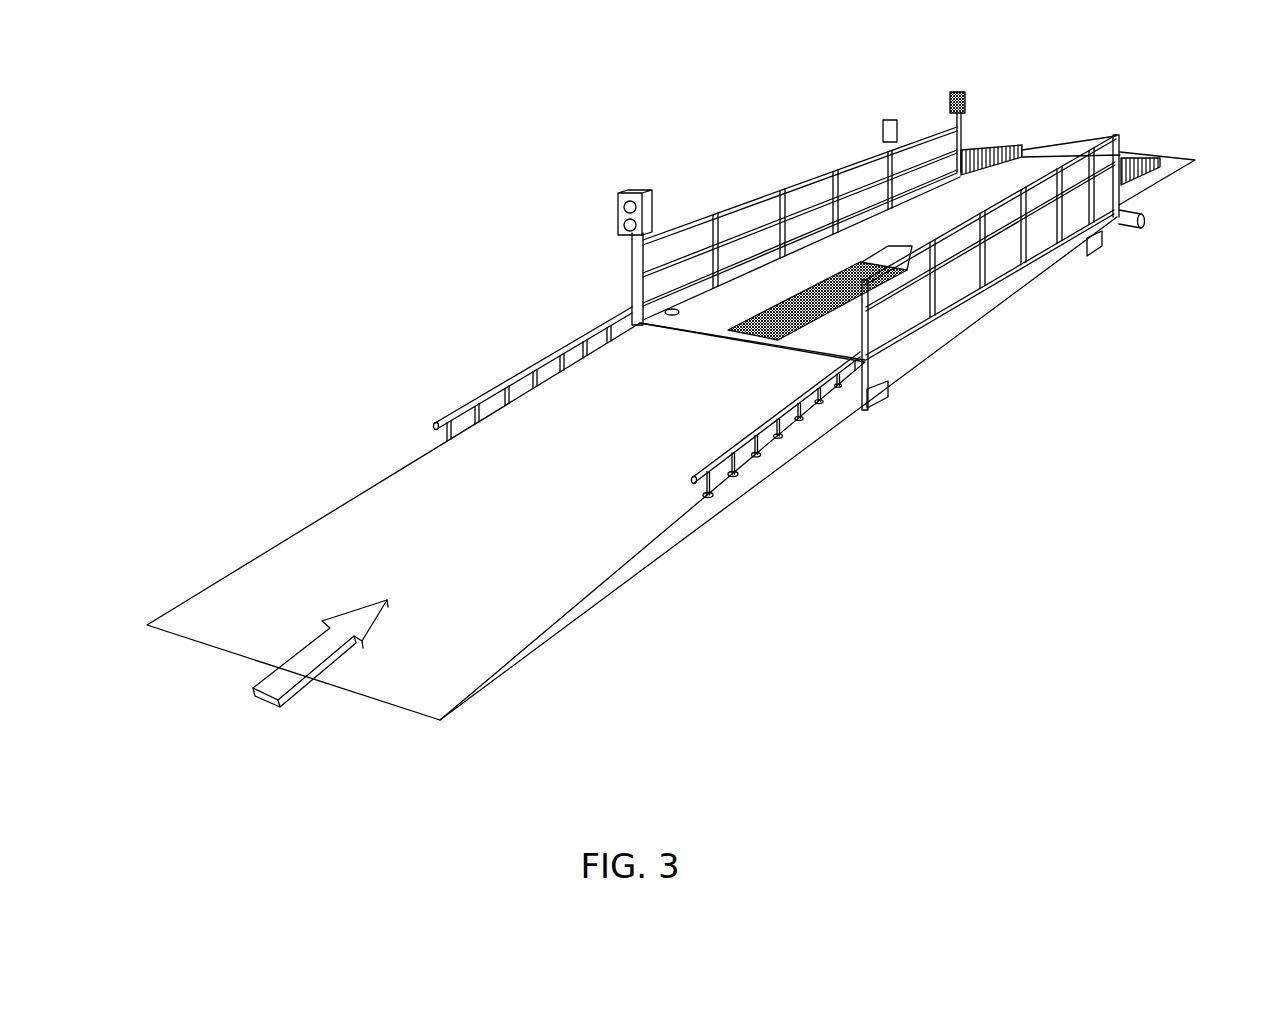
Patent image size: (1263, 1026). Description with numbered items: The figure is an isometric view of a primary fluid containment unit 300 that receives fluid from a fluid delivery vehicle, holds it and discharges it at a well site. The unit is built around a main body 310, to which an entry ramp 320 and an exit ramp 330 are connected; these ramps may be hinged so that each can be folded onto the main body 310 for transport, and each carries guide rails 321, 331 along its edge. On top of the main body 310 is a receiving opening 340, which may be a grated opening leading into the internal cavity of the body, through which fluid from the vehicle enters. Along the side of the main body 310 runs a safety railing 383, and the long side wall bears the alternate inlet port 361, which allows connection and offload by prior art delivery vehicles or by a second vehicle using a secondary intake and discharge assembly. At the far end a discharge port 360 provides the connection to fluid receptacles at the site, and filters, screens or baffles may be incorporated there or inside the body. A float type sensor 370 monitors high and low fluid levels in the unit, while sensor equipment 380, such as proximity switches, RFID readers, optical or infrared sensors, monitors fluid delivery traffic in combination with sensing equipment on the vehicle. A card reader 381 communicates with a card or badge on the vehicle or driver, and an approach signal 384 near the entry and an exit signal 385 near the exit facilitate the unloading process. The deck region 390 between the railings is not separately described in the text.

The primary fluid containment unit 300 is at (1007, 438).
The main body 310 is at (1112, 236).
The entry ramp 320 is at (580, 548).
The guide rail 321 is at (767, 413).
The exit ramp 330 is at (1127, 155).
The guide rail 331 is at (990, 150).
The receiving opening 340 is at (800, 283).
The discharge port 360 is at (1148, 217).
The alternate inlet port 361 is at (904, 362).
The float type sensor 370 is at (672, 309).
The sensor equipment 380 is at (883, 262).
The card reader 381 is at (887, 119).
The safety railing 383 is at (908, 140).
The approach signal 384 is at (617, 211).
The exit signal 385 is at (958, 91).
The deck 390 is at (1040, 178).